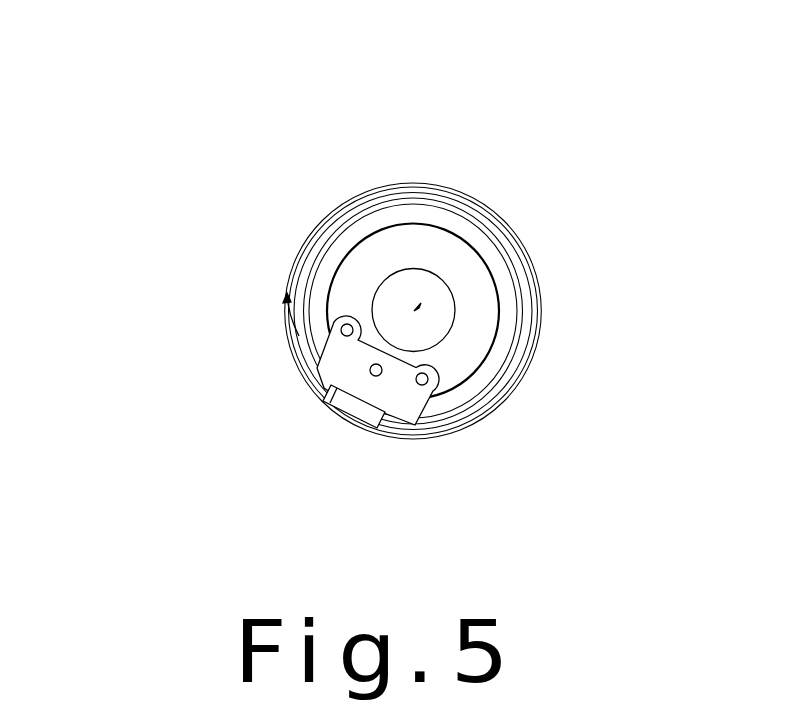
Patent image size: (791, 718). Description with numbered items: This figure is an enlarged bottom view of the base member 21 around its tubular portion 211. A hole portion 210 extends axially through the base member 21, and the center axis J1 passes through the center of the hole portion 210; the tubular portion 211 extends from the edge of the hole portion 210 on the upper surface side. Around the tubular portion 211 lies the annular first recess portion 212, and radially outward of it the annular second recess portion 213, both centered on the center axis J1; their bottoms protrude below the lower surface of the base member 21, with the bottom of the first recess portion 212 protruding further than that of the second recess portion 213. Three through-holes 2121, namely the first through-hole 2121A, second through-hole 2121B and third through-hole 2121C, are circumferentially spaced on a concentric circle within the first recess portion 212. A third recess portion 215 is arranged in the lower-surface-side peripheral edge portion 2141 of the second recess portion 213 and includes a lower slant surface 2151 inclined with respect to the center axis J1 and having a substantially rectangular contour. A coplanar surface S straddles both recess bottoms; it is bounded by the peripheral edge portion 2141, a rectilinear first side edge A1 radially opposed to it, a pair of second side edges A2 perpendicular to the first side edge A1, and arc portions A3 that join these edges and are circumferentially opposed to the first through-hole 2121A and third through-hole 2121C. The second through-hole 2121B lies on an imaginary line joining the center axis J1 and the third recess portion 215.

The base member 21 is at (143, 93).
The hole portion 210 is at (417, 288).
The tubular portion 211 is at (402, 270).
The first recess portion 212 is at (383, 247).
The second recess portion 213 is at (340, 237).
The through-hole 2121 is at (134, 246).
The first through-hole 2121A is at (347, 315).
The second through-hole 2121B is at (318, 352).
The third through-hole 2121C is at (371, 367).
The peripheral edge portion 2141 is at (303, 372).
The third recess portion 215 is at (333, 418).
The lower slant surface 2151 is at (360, 413).
The first side edge A1 is at (378, 368).
The second side edges A2 is at (297, 335).
The arc portions A3 is at (349, 324).
The center axis J1 is at (414, 311).
The coplanar surface S is at (395, 408).